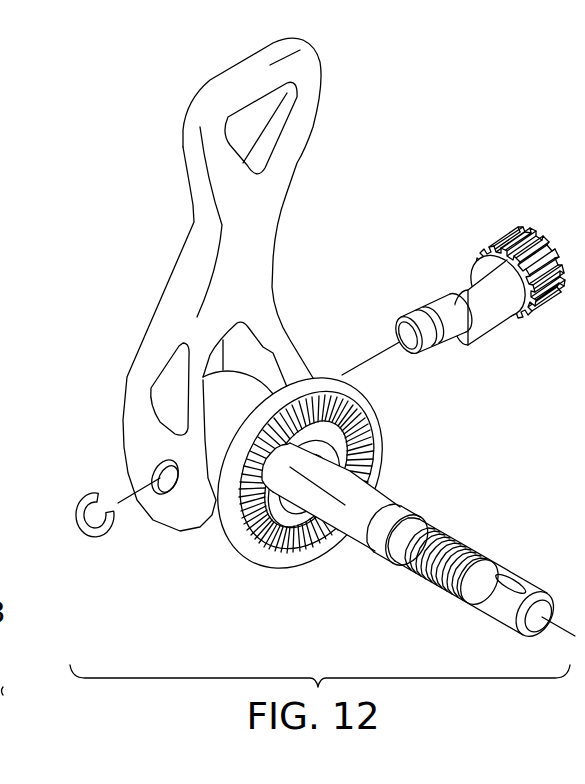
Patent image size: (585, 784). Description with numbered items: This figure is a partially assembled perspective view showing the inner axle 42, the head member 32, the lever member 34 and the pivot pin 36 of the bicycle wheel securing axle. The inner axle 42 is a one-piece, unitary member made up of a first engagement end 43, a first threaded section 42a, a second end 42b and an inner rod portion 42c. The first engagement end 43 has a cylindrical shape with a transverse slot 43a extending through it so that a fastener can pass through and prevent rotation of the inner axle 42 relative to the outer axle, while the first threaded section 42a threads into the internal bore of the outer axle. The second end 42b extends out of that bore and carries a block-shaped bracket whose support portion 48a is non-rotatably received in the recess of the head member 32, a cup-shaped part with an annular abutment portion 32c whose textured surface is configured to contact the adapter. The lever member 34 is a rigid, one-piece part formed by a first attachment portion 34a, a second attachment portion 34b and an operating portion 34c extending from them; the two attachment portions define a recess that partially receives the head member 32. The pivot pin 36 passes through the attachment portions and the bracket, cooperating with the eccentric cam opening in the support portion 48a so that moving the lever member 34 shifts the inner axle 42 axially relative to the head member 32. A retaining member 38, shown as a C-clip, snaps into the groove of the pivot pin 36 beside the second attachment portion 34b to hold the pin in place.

The head member 32 is at (324, 476).
The annular abutment portion 32c is at (233, 532).
The lever member 34 is at (246, 284).
The first attachment portion 34a is at (290, 365).
The second attachment portion 34b is at (137, 455).
The operating portion 34c is at (287, 150).
The pivot pin 36 is at (544, 222).
The retaining member 38 is at (100, 537).
The inner axle 42 is at (418, 553).
The first threaded section 42a is at (430, 570).
The second end 42b is at (348, 537).
The inner rod portion 42c is at (373, 507).
The first engagement end 43 is at (542, 617).
The slot 43a is at (505, 593).
The support portion 48a is at (296, 540).